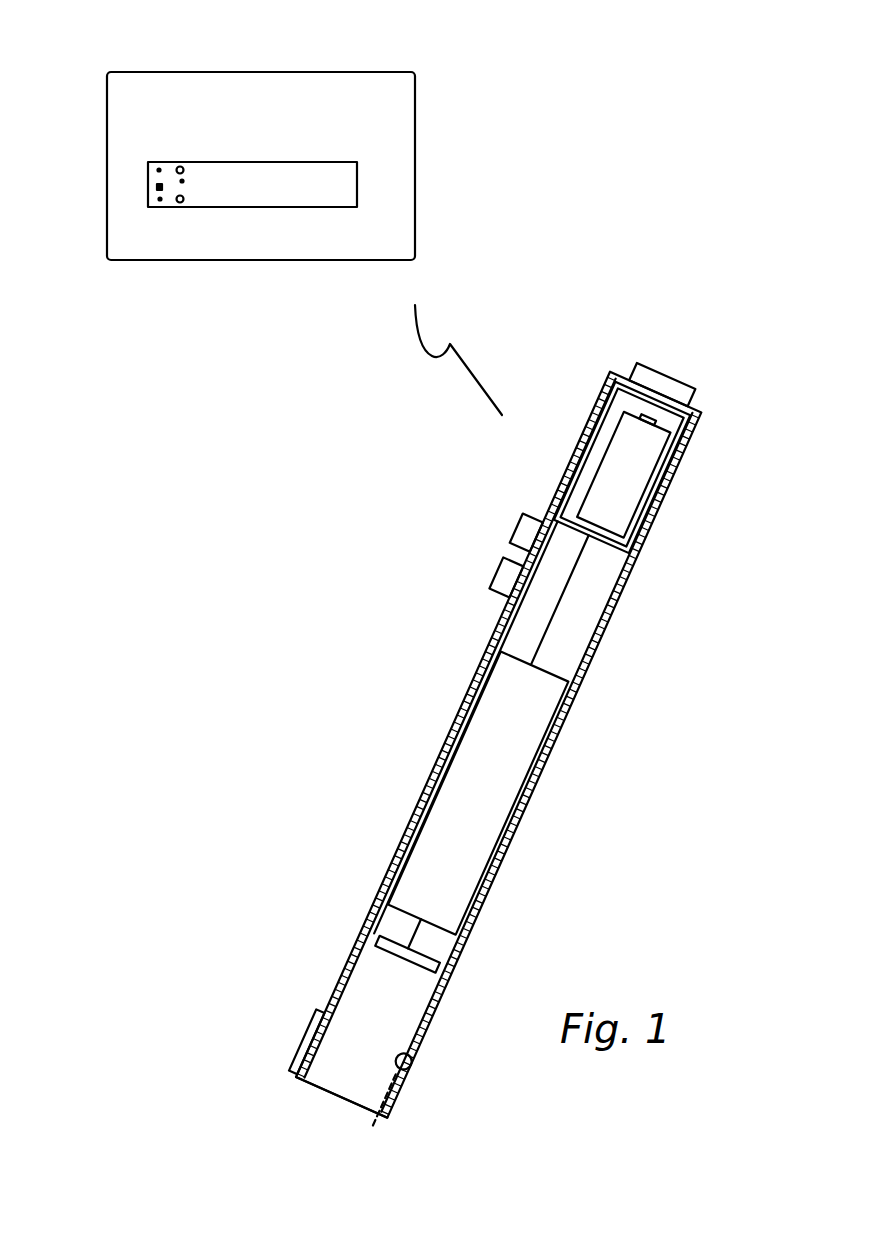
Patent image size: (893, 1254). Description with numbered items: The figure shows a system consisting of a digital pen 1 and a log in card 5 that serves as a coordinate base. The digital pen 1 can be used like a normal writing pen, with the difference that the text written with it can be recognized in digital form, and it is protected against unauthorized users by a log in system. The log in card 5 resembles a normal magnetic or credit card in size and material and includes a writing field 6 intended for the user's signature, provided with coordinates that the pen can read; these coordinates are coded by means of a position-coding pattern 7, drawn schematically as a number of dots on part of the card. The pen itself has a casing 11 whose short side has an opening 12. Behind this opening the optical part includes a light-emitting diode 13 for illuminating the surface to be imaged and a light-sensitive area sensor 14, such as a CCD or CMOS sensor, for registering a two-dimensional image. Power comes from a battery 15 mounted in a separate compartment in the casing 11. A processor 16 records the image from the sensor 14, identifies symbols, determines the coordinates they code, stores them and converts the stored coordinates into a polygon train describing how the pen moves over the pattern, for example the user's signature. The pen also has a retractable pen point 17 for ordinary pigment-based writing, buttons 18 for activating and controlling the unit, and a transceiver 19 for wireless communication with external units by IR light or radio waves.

The digital pen 1 is at (423, 730).
The log in card 5 is at (438, 140).
The writing field 6 is at (363, 173).
The position-coding pattern 7 is at (137, 191).
The casing 11 is at (573, 704).
The opening 12 is at (333, 1092).
The light-emitting diode 13 is at (410, 1062).
The light-sensitive area sensor 14 is at (435, 953).
The battery 15 is at (618, 488).
The processor 16 is at (477, 822).
The pen point 17 is at (310, 1025).
The buttons 18 is at (523, 537).
The transceiver 19 is at (677, 381).